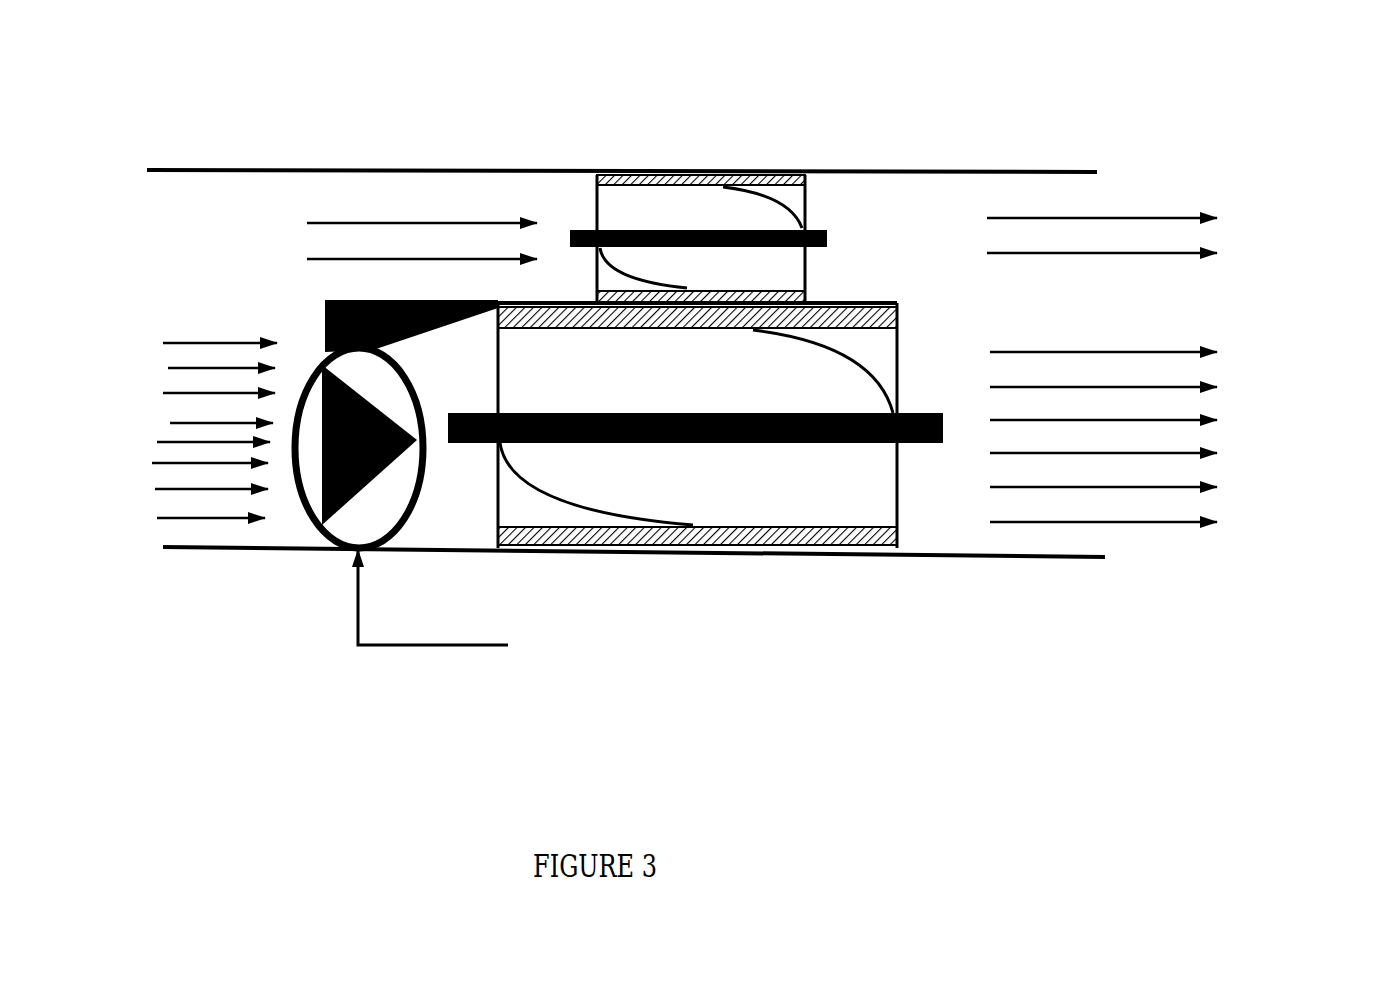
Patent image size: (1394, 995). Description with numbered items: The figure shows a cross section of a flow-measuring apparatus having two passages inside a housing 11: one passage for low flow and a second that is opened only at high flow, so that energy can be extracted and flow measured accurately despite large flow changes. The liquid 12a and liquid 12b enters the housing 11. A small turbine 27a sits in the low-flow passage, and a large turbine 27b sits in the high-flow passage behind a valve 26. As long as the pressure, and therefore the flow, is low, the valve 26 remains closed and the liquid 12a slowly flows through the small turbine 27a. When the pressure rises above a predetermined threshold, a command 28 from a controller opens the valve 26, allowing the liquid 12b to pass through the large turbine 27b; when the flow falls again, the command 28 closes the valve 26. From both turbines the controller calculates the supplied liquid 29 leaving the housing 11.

The housing 11 is at (862, 165).
The liquid 12a is at (347, 237).
The liquid 12b is at (157, 413).
The valve 26 is at (318, 345).
The small turbine 27a is at (633, 210).
The large turbine 27b is at (773, 478).
The command 28 is at (623, 668).
The supplied liquid 29 is at (1225, 245).